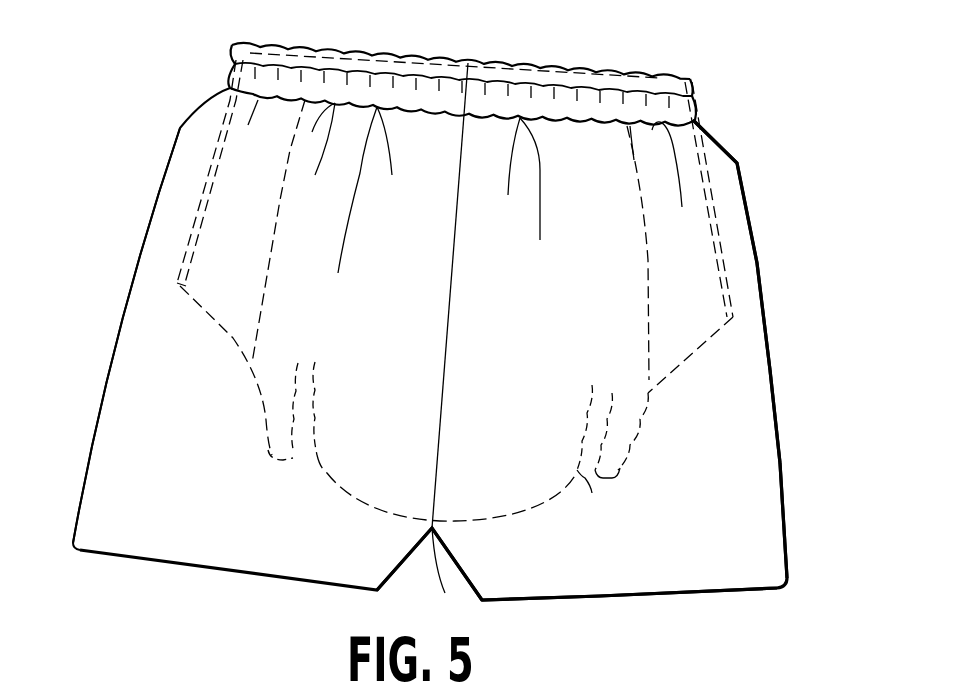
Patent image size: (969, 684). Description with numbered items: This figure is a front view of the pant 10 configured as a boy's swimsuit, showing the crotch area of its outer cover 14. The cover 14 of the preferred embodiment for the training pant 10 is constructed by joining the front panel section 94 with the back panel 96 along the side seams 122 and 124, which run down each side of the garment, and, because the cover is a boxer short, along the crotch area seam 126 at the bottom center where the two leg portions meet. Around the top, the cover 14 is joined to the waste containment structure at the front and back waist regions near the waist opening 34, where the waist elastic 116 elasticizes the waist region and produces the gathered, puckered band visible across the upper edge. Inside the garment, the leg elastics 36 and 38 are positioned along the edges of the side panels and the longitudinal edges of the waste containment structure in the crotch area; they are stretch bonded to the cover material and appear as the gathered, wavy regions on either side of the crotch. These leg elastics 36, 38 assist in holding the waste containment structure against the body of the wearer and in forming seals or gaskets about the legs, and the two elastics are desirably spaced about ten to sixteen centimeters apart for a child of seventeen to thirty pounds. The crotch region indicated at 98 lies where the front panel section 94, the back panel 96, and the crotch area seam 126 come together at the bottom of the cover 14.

The pant 10 is at (779, 96).
The cover 14 is at (775, 378).
The waist opening 34 is at (462, 65).
The leg elastic 36 is at (283, 460).
The leg elastic 38 is at (592, 494).
The front panel section 94 is at (715, 570).
The back panel 96 is at (750, 480).
The crotch 98 is at (412, 592).
The waist elastic 116 is at (395, 112).
The seam 122 is at (122, 310).
The seam 124 is at (757, 263).
The crotch area seam 126 is at (451, 575).